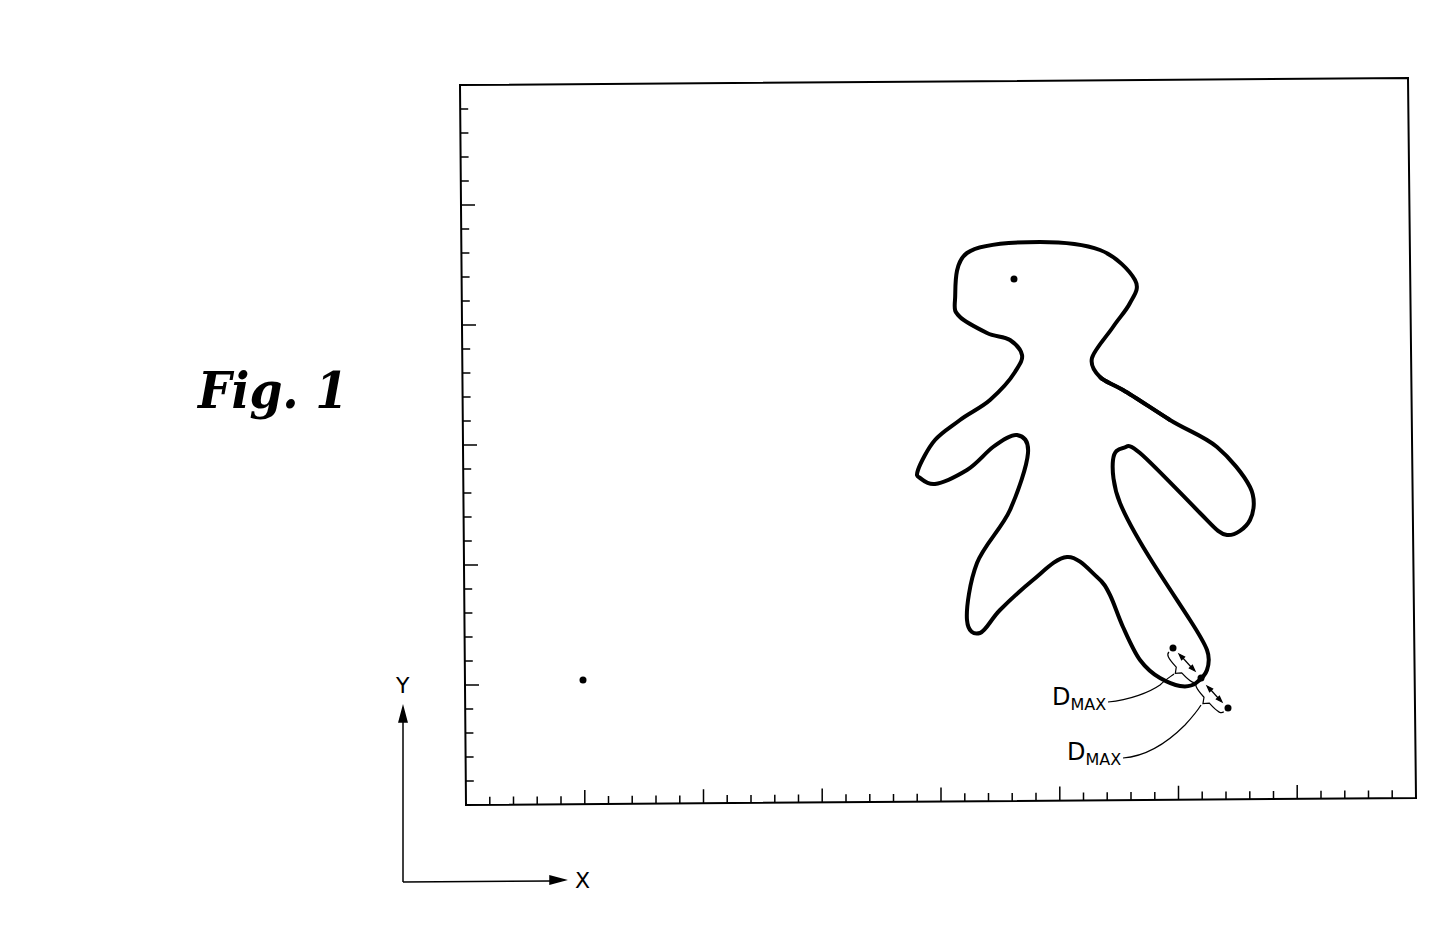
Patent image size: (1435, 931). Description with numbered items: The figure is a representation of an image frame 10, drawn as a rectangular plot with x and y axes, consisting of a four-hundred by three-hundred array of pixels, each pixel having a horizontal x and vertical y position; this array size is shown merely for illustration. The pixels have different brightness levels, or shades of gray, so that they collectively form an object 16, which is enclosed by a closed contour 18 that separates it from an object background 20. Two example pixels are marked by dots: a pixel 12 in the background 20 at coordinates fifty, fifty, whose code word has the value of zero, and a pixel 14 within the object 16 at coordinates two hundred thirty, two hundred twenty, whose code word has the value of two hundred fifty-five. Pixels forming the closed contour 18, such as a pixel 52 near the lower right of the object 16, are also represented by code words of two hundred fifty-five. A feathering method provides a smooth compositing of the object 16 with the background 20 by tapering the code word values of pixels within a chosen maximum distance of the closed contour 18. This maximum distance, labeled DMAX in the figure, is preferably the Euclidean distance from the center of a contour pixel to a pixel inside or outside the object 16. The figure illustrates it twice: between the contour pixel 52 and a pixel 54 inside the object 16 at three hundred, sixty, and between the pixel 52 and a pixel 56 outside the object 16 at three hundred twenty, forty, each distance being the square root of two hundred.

The image frame 10 is at (922, 66).
The pixel 12 is at (585, 680).
The pixel 14 is at (1014, 279).
The object 16 is at (1150, 273).
The closed contour 18 is at (1122, 388).
The object background 20 is at (690, 379).
The pixel 52 is at (1207, 677).
The pixel 54 is at (1177, 647).
The pixel 56 is at (1232, 708).